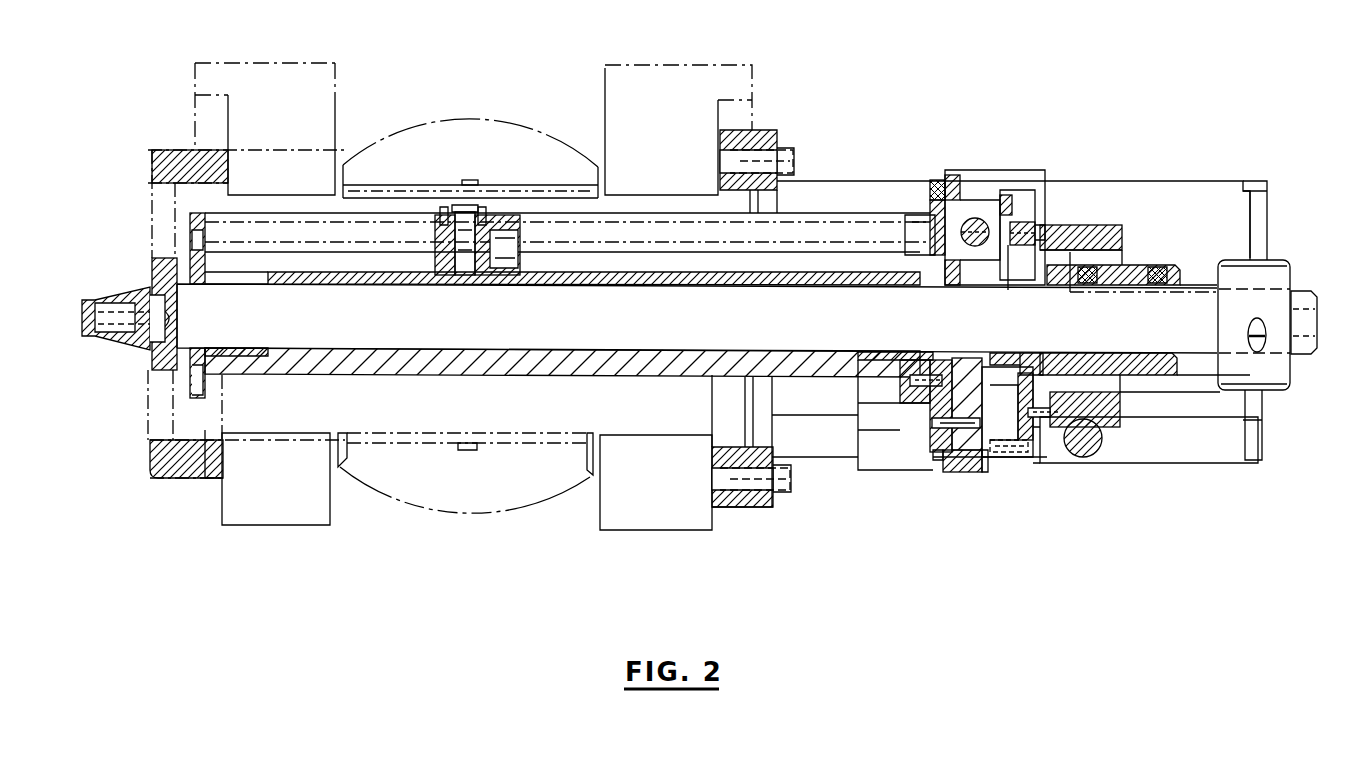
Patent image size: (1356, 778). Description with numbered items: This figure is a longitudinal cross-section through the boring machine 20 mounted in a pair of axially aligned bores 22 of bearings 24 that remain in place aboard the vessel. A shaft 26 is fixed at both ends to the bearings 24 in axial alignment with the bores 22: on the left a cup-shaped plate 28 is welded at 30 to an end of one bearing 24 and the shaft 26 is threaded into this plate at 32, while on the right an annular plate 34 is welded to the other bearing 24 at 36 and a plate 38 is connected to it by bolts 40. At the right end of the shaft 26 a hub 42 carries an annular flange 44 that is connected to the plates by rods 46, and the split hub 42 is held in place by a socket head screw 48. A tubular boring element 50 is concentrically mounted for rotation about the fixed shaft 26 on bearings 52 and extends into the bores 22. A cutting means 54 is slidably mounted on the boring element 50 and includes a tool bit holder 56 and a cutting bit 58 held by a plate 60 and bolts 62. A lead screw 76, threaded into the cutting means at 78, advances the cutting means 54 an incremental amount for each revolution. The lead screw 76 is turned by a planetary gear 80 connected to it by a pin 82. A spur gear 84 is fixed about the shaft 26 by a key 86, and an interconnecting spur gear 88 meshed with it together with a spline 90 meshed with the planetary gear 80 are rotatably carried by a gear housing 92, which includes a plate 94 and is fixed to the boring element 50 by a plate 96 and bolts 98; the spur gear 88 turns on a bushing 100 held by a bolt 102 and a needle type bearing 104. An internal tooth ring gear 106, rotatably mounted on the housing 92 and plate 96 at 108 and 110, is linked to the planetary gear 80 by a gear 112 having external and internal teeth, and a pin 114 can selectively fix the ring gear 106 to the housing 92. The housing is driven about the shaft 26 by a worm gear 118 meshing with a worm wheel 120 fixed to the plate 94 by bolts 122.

The boring machine 20 is at (816, 88).
The bores 22 is at (336, 165).
The bearings 24 is at (247, 524).
The shaft 26 is at (1309, 334).
The cup-shaped plate 28 is at (152, 460).
The weld 30 is at (218, 484).
The threaded connection 32 is at (145, 292).
The annular plate 34 is at (730, 506).
The weld 36 is at (713, 510).
The plate 38 is at (766, 502).
The bolts 40 is at (795, 479).
The hub 42 is at (1276, 260).
The annular flange 44 is at (1262, 399).
The rods 46 is at (875, 450).
The socket head screw 48 is at (1264, 338).
The tubular boring element 50 is at (541, 375).
The bearings 52 is at (250, 352).
The cutting means 54 is at (483, 213).
The tool bit holder 56 is at (430, 217).
The cutting bit 58 is at (480, 210).
The plate 60 is at (463, 207).
The bolts 62 is at (442, 208).
The lead screw 76 is at (697, 230).
The threaded connection 78 is at (542, 255).
The planetary gear 80 is at (963, 208).
The pin 82 is at (905, 215).
The spur gear 84 is at (1068, 460).
The key 86 is at (1110, 265).
The spur gear 88 is at (1012, 190).
The spline 90 is at (977, 222).
The gear housing 92 is at (1013, 460).
The plate 94 is at (1033, 460).
The plate 96 is at (932, 462).
The bolts 98 is at (935, 422).
The bushing 100 is at (1032, 233).
The bolt 102 is at (1040, 236).
The needle type bearing 104 is at (1010, 255).
The internal tooth ring gear 106 is at (958, 472).
The mounting location 108 is at (984, 474).
The mounting location 110 is at (947, 474).
The gear 112 is at (936, 200).
The pin 114 is at (990, 455).
The worm gear 118 is at (1093, 452).
The worm wheel 120 is at (1118, 427).
The bolts 122 is at (1053, 413).